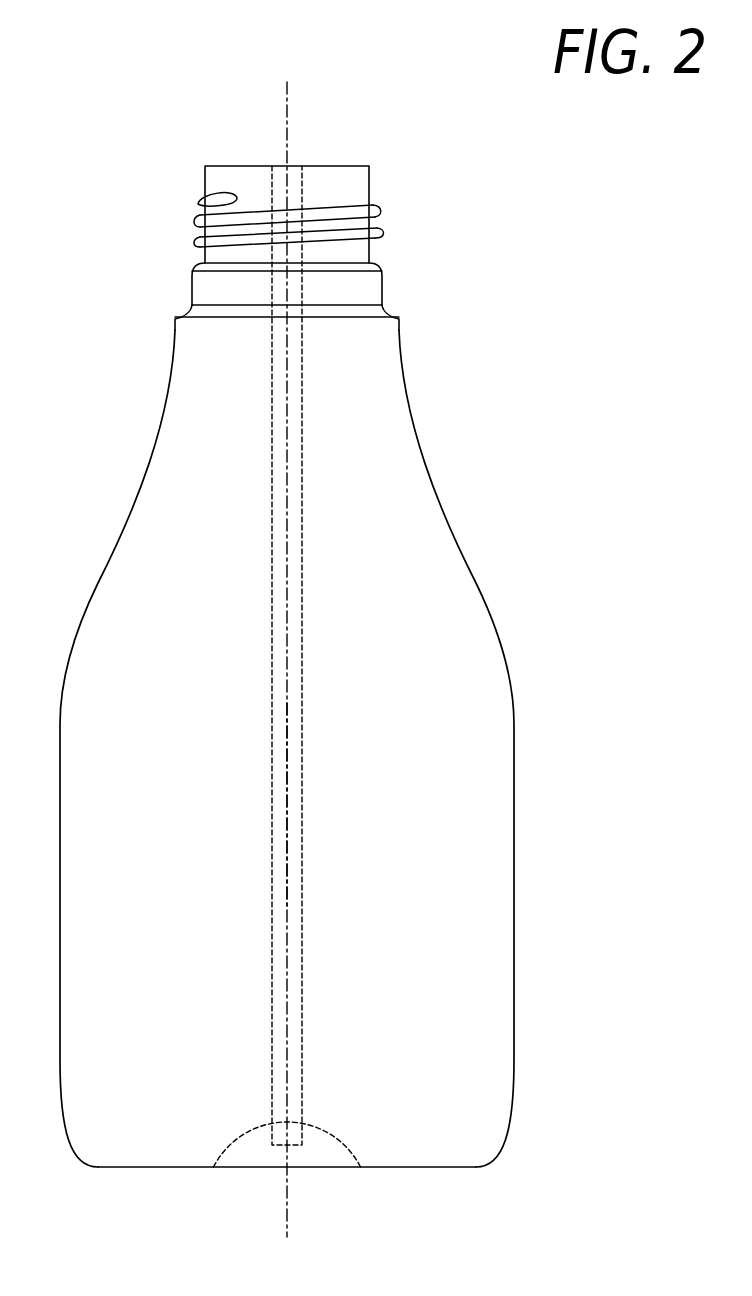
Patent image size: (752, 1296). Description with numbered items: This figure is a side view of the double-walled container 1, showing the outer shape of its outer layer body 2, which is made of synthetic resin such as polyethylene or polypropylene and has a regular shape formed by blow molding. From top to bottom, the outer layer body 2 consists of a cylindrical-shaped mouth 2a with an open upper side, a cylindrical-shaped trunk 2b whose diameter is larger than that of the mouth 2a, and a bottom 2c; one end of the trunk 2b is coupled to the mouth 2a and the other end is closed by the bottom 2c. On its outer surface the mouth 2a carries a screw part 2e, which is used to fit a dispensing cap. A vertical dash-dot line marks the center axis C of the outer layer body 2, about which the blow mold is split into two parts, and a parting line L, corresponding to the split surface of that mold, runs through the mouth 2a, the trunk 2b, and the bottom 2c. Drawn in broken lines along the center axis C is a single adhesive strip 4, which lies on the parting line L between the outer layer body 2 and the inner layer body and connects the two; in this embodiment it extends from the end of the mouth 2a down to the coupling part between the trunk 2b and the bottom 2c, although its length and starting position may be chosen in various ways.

The double-walled container 1 is at (465, 405).
The outer layer body 2 is at (492, 618).
The mouth 2a is at (228, 172).
The trunk 2b is at (487, 870).
The bottom 2c is at (317, 1167).
The screw part 2e is at (202, 217).
The adhesive strip 4 is at (302, 933).
The center axis C is at (325, 642).
The parting line L is at (287, 807).